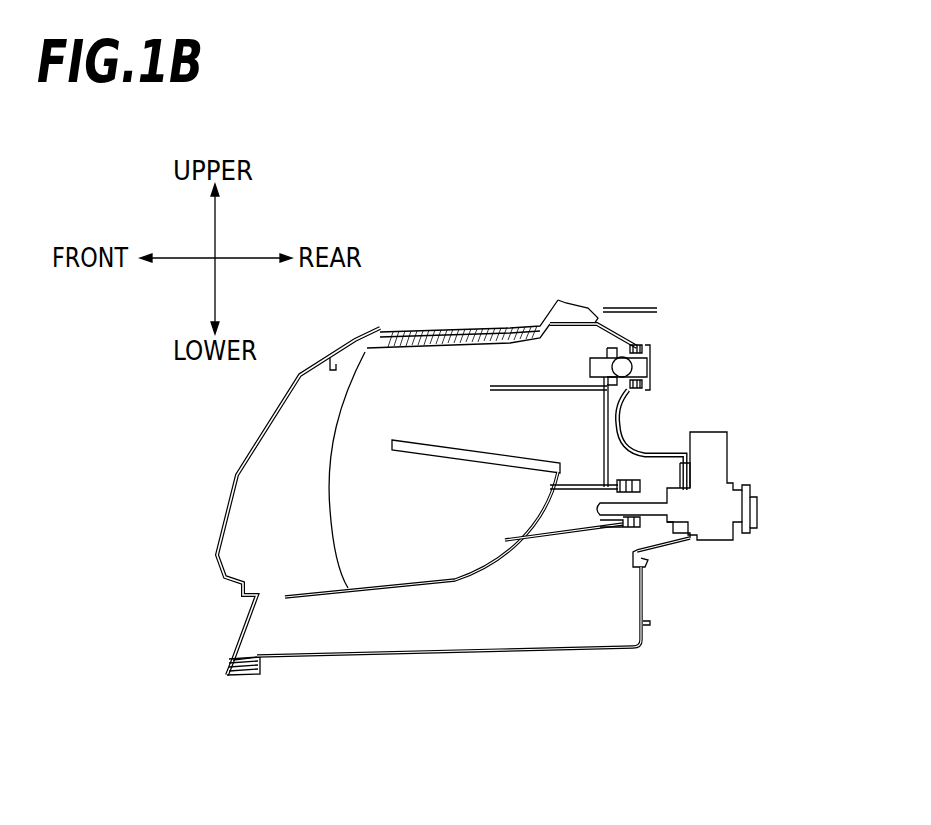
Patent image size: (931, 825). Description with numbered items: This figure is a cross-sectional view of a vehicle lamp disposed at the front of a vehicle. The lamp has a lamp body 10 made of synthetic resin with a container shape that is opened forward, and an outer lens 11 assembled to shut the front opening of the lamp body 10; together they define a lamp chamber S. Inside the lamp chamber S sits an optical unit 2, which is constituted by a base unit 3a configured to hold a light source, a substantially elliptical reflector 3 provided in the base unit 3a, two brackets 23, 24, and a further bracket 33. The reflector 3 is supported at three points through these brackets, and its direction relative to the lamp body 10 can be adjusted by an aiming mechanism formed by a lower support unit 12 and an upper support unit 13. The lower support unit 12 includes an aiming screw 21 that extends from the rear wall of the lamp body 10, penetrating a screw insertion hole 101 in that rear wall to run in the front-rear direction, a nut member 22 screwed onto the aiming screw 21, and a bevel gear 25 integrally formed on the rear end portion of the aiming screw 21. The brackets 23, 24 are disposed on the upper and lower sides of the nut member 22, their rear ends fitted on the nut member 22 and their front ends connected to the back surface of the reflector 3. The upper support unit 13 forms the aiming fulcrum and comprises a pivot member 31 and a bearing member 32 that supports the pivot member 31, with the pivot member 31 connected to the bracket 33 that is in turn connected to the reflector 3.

The optical unit 2 is at (530, 250).
The reflector 3 is at (381, 331).
The base unit 3a is at (403, 440).
The bracket 23 is at (547, 527).
The bracket 24 is at (585, 485).
The bracket 33 is at (614, 492).
The upper support unit 13 is at (657, 341).
The bearing member 32 is at (650, 352).
The pivot member 31 is at (650, 390).
The lamp body 10 is at (648, 443).
The bevel gear 25 is at (755, 516).
The screw insertion hole 101 is at (672, 541).
The aiming screw 21 is at (648, 538).
The nut member 22 is at (650, 562).
The outer lens 11 is at (257, 428).
The lower support unit 12 is at (620, 546).
The lamp chamber S is at (301, 633).